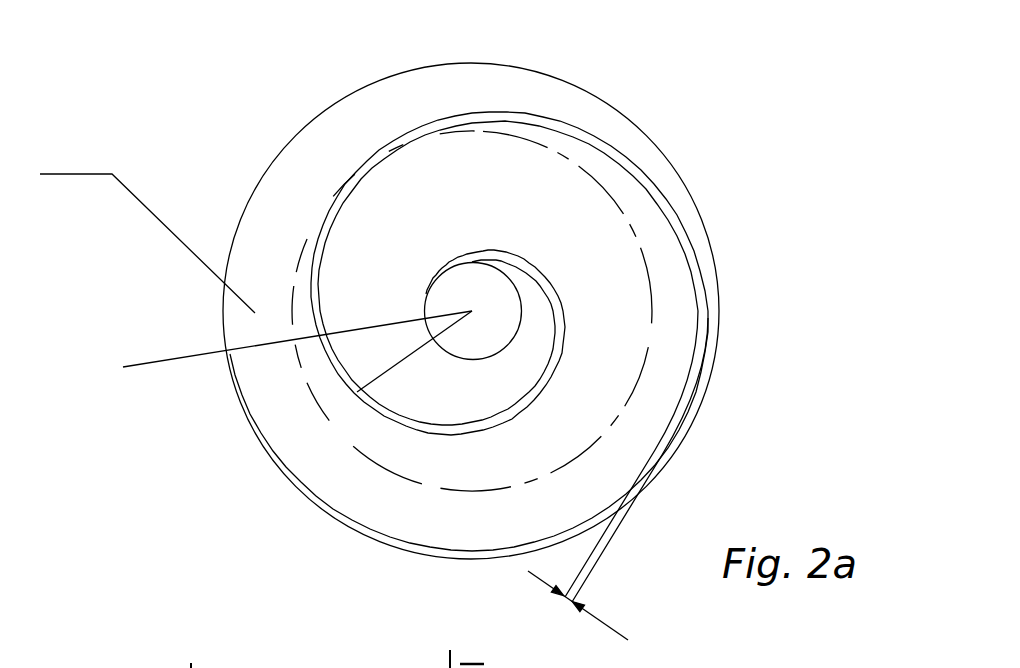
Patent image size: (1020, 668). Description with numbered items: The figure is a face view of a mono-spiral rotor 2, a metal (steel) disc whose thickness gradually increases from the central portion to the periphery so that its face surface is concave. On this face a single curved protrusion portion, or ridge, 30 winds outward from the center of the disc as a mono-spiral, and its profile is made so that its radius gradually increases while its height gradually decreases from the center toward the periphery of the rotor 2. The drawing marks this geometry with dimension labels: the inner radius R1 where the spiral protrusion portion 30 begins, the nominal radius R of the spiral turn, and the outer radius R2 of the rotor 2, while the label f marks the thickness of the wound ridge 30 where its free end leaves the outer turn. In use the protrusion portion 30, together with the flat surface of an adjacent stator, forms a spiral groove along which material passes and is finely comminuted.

The rotor 2 is at (618, 108).
The mono-spiral protrusion portion 30 is at (367, 165).
The nominal radius (dashed circle) R is at (472, 311).
The inner radius R1 is at (408, 351).
The outer radius R2 is at (297, 339).
The strip thickness f is at (578, 619).